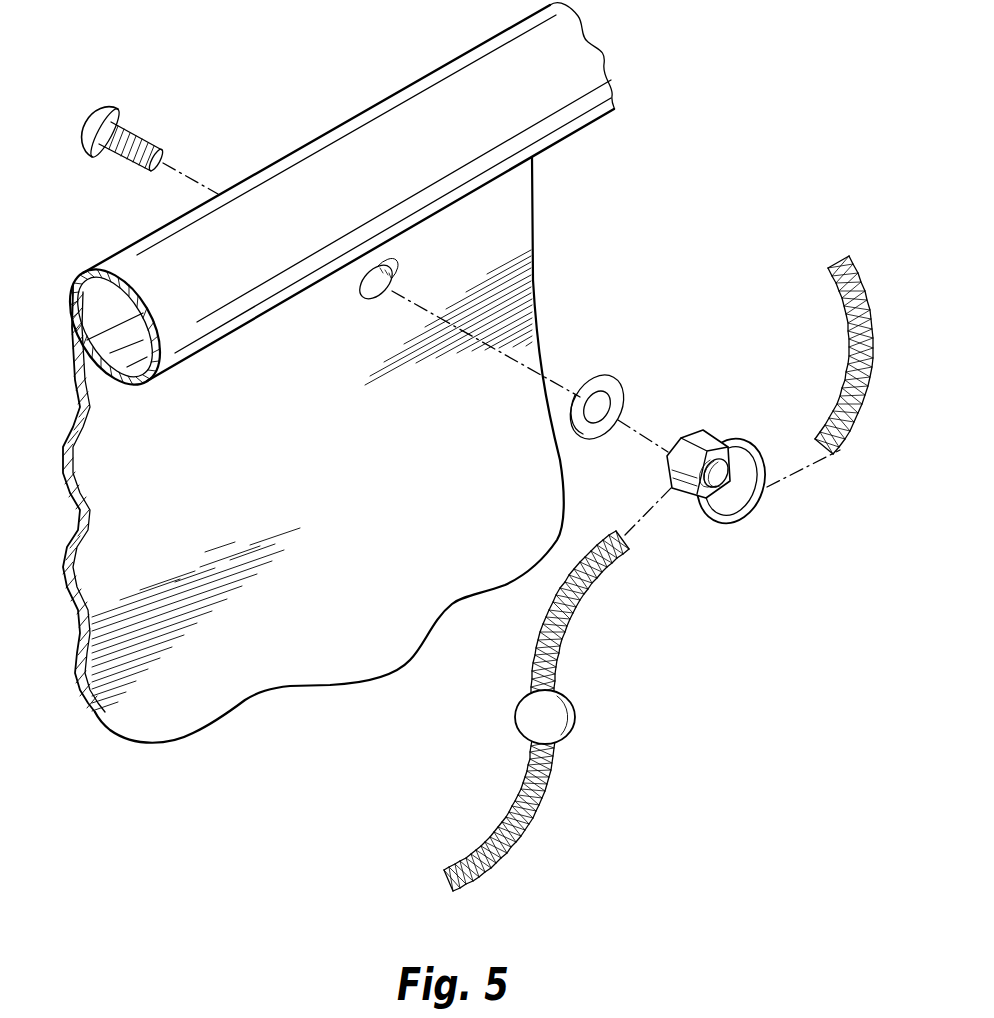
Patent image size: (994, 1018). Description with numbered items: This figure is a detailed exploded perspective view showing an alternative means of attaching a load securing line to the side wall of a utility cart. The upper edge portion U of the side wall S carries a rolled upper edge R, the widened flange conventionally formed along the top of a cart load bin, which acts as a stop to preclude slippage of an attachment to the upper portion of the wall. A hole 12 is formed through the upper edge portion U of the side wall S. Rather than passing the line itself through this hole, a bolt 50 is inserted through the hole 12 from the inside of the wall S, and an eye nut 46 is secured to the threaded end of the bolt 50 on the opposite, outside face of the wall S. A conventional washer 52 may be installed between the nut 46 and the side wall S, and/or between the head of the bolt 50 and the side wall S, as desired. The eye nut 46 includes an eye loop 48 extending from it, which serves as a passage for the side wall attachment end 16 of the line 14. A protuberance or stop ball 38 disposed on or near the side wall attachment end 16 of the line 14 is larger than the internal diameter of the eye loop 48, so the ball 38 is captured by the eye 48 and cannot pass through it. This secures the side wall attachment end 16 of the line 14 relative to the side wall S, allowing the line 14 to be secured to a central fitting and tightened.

The rolled upper edge R is at (350, 118).
The upper edge portion U is at (508, 206).
The side wall S is at (371, 512).
The hole 12 is at (364, 298).
The bolt 50 is at (127, 123).
The washer 52 is at (598, 372).
The eye nut 46 is at (702, 428).
The eye loop 48 is at (727, 520).
The line 14 is at (838, 266).
The side wall attachment end 16 is at (566, 626).
The stop ball 38 is at (562, 714).